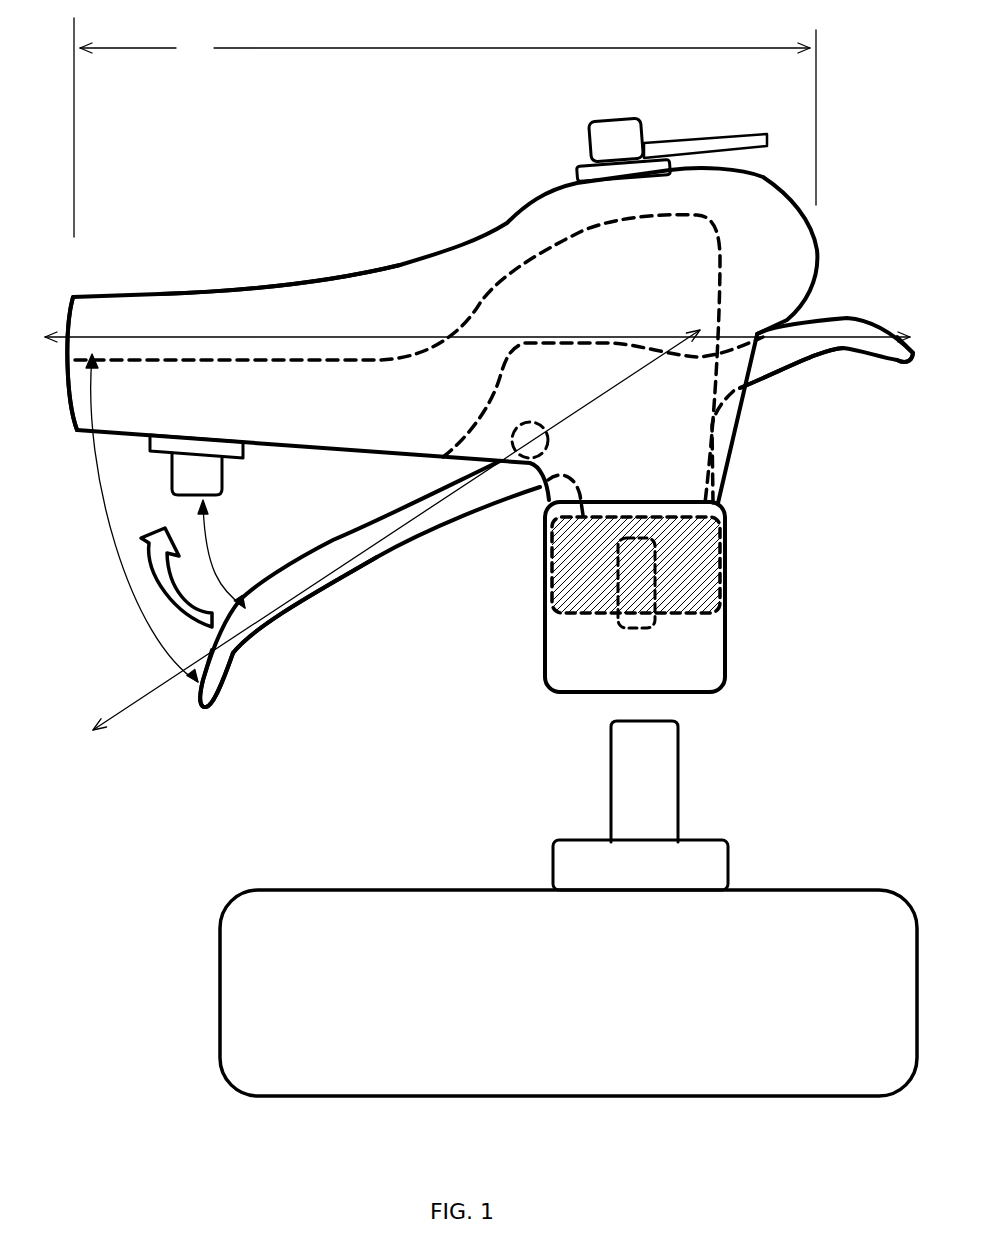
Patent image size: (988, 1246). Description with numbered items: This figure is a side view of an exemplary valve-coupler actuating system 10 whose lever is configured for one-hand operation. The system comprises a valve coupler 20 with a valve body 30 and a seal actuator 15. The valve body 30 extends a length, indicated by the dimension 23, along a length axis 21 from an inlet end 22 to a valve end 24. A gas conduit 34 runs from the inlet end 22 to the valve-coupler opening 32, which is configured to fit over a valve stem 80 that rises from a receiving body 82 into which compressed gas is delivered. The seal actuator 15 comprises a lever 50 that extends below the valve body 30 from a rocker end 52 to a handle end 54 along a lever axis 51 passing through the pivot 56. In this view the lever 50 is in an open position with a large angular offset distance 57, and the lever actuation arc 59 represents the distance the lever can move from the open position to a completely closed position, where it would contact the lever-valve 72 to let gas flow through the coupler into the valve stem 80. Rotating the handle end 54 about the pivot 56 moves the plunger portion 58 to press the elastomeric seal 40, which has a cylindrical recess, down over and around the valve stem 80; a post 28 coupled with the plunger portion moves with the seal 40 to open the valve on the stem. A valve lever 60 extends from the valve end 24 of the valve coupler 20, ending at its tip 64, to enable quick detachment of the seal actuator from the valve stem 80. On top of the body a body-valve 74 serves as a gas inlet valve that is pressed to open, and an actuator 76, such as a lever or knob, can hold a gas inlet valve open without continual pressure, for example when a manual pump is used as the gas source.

The valve-coupler actuating system 10 is at (378, 186).
The seal actuator 15 is at (670, 490).
The valve coupler 20 is at (707, 250).
The length axis 21 is at (520, 337).
The inlet end 22 is at (70, 322).
The length of body 23 is at (445, 127).
The valve end 24 is at (817, 248).
The post 28 is at (633, 620).
The valve body 30 is at (245, 303).
The valve-coupler opening 32 is at (591, 693).
The gas conduit 34 is at (127, 360).
The seal 40 is at (687, 563).
The lever 50 is at (377, 557).
The lever axis 51 is at (317, 580).
The rocker end 52 is at (685, 430).
The handle end 54 is at (202, 703).
The pivot 56 is at (530, 460).
The angular offset distance 57 is at (128, 577).
The plunger portion 58 is at (693, 583).
The lever actuation arc 59 is at (213, 553).
The valve lever 60 is at (843, 350).
The spout tip 64 is at (903, 360).
The lever-valve 72 is at (188, 477).
The body-valve 74 is at (630, 130).
The actuator 76 is at (677, 147).
The valve stem 80 is at (644, 791).
The receiving body 82 is at (770, 924).